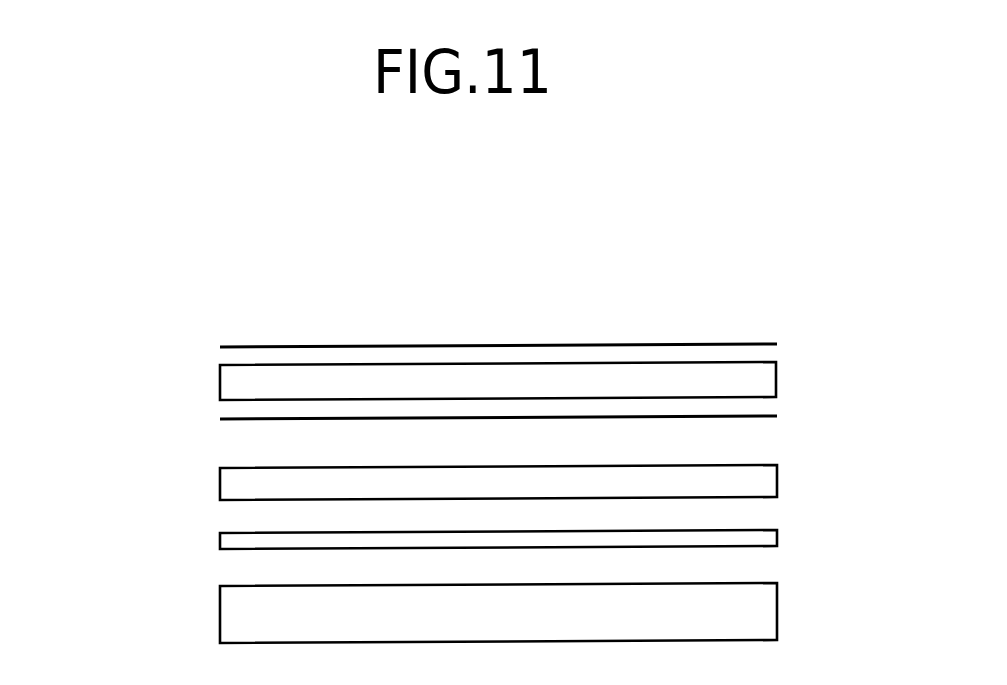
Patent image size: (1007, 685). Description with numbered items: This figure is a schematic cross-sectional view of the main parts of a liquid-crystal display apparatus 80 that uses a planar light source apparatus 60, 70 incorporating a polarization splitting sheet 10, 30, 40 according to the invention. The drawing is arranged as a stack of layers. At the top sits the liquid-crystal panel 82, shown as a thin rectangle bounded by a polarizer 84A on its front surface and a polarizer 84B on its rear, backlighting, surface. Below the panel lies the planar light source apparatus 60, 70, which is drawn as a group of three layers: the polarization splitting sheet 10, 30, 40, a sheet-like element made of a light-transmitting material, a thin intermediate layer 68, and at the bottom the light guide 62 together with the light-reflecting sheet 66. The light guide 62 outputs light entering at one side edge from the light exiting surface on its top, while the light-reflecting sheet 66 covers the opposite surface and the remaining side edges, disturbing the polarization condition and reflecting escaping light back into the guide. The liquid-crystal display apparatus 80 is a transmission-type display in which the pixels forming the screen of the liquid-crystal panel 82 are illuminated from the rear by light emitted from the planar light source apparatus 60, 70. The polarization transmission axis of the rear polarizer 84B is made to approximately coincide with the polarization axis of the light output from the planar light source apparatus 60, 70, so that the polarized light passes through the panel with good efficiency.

The liquid-crystal display apparatus 80 is at (292, 325).
The liquid-crystal panel 82 is at (787, 335).
The polarizer 84A is at (597, 343).
The polarizer 84B is at (558, 418).
The polarization splitting sheet 10 is at (400, 484).
The polarization splitting sheet 30 is at (400, 484).
The polarization splitting sheet 40 is at (233, 483).
The adhesive layer 68 is at (233, 543).
The light guide 62 is at (426, 613).
The light-reflecting sheet 66 is at (233, 612).
The planar light source apparatus 60 is at (468, 539).
The planar light source apparatus 70 is at (787, 435).